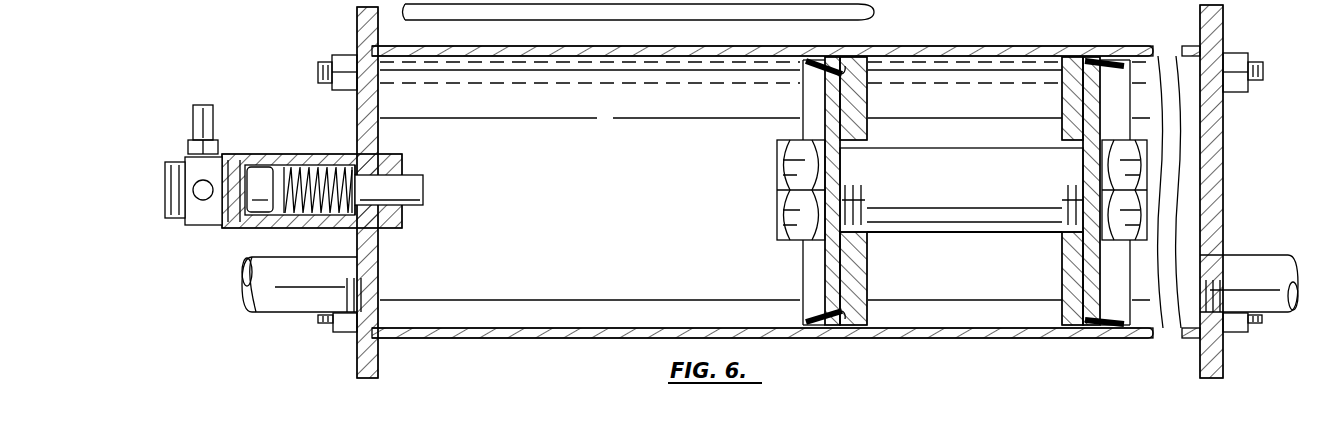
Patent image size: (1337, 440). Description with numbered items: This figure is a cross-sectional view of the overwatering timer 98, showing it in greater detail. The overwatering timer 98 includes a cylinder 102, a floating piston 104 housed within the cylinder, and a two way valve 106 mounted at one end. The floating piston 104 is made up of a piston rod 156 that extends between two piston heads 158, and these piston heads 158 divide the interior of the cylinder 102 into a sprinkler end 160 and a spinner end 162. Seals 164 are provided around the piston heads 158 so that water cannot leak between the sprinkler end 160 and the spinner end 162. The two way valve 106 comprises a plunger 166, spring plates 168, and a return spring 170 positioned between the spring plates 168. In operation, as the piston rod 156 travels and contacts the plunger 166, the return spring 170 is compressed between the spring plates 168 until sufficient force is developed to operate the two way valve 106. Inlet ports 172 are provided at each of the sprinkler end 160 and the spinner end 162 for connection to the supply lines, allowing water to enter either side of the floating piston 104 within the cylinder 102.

The overwatering timer 98 is at (332, 40).
The cylinder 102 is at (495, 331).
The floating piston 104 is at (940, 232).
The two way valve 106 is at (262, 172).
The piston rod 156 is at (942, 160).
The piston heads 158 is at (862, 282).
The sprinkler end 160 is at (1218, 176).
The spinner end 162 is at (372, 245).
The seals 164 is at (820, 320).
The plunger 166 is at (420, 186).
The spring plates 168 is at (348, 164).
The return spring 170 is at (294, 228).
The inlet ports 172 is at (368, 273).